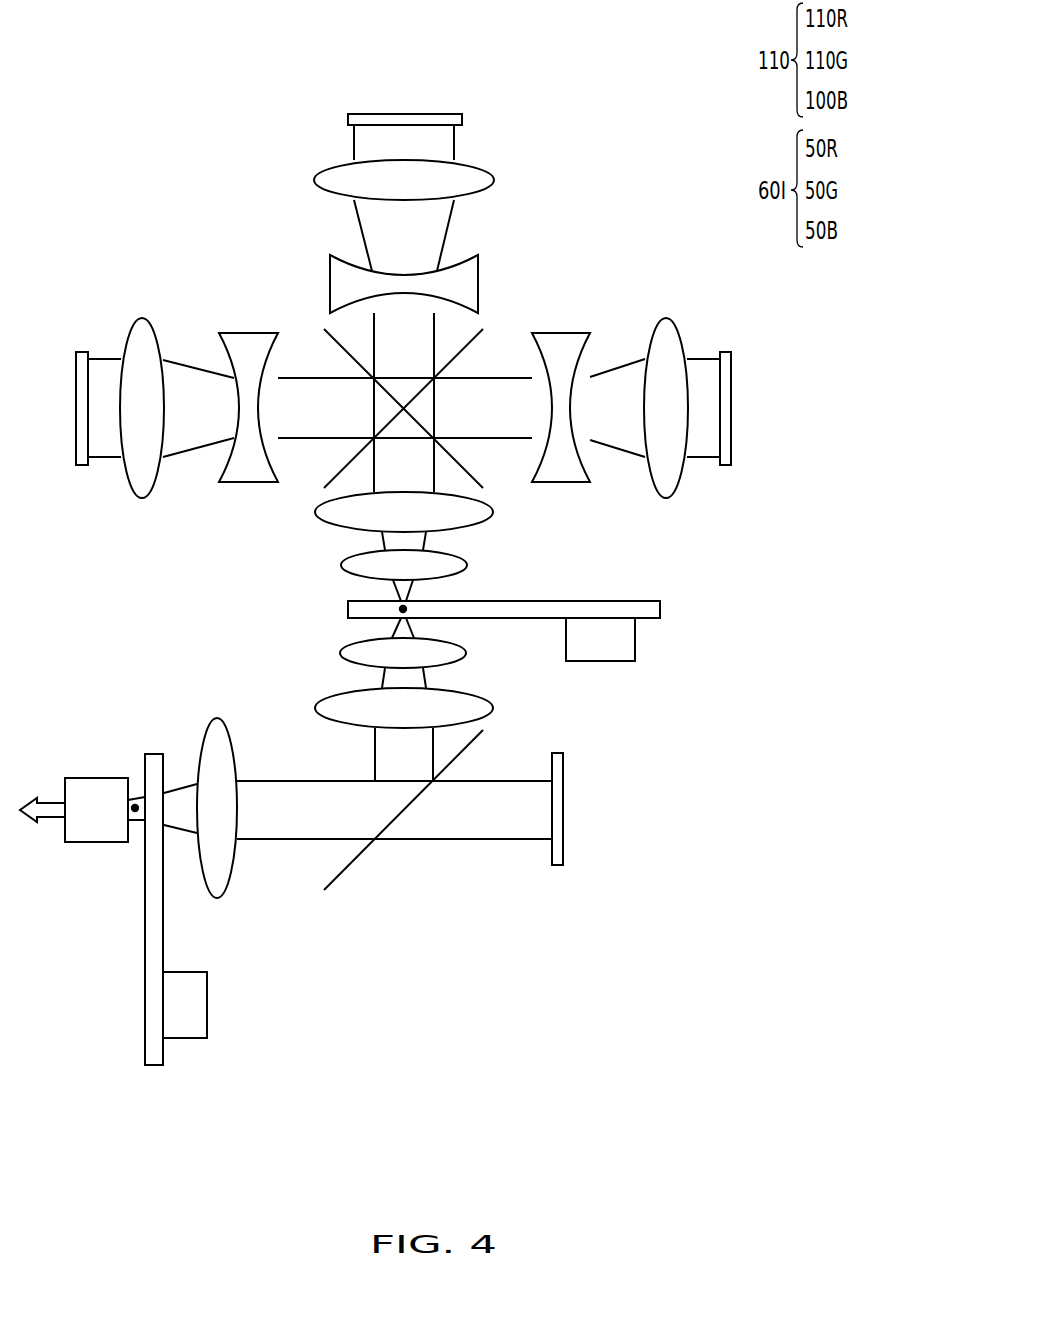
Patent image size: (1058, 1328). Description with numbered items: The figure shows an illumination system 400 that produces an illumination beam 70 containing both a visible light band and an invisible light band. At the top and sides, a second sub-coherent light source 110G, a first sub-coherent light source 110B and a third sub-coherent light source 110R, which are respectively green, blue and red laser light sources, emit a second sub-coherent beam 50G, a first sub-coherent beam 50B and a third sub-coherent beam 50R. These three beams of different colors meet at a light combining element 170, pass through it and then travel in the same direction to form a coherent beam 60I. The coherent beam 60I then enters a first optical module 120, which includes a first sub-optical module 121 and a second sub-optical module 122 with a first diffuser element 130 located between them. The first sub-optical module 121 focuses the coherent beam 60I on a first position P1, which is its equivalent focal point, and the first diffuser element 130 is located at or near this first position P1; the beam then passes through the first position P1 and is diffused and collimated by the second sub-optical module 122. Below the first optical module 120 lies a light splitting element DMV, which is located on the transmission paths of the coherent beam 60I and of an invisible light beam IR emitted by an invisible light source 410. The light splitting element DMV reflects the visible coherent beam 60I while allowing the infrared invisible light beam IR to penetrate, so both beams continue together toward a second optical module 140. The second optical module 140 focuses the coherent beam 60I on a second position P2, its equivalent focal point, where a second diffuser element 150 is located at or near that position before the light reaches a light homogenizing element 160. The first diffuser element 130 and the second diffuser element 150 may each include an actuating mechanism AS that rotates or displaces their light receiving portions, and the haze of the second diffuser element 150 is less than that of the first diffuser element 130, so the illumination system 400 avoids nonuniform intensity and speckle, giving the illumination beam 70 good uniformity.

The second sub-coherent light source 110G is at (452, 120).
The third sub-coherent light source 110R is at (725, 352).
The first sub-coherent light source 110B is at (83, 358).
The second sub-coherent beam 50G is at (427, 233).
The third sub-coherent beam 50R is at (616, 372).
The first sub-coherent beam 50B is at (190, 378).
The light combining element 170 is at (463, 333).
The coherent beam 60I is at (435, 475).
The first optical module 120 is at (248, 528).
The first sub-optical module 121 is at (342, 562).
The second sub-optical module 122 is at (342, 660).
The first diffuser element 130 is at (543, 610).
The first position P1 is at (408, 605).
The actuating mechanism AS is at (627, 640).
The light splitting element DMV is at (478, 742).
The invisible light source 410 is at (558, 752).
The invisible light beam IR is at (483, 815).
The second optical module 140 is at (217, 742).
The second diffuser element 150 is at (155, 950).
The light homogenizing element 160 is at (90, 793).
The second position P2 is at (138, 817).
The illumination beam 70 is at (52, 817).
The illumination system 400 is at (726, 1102).